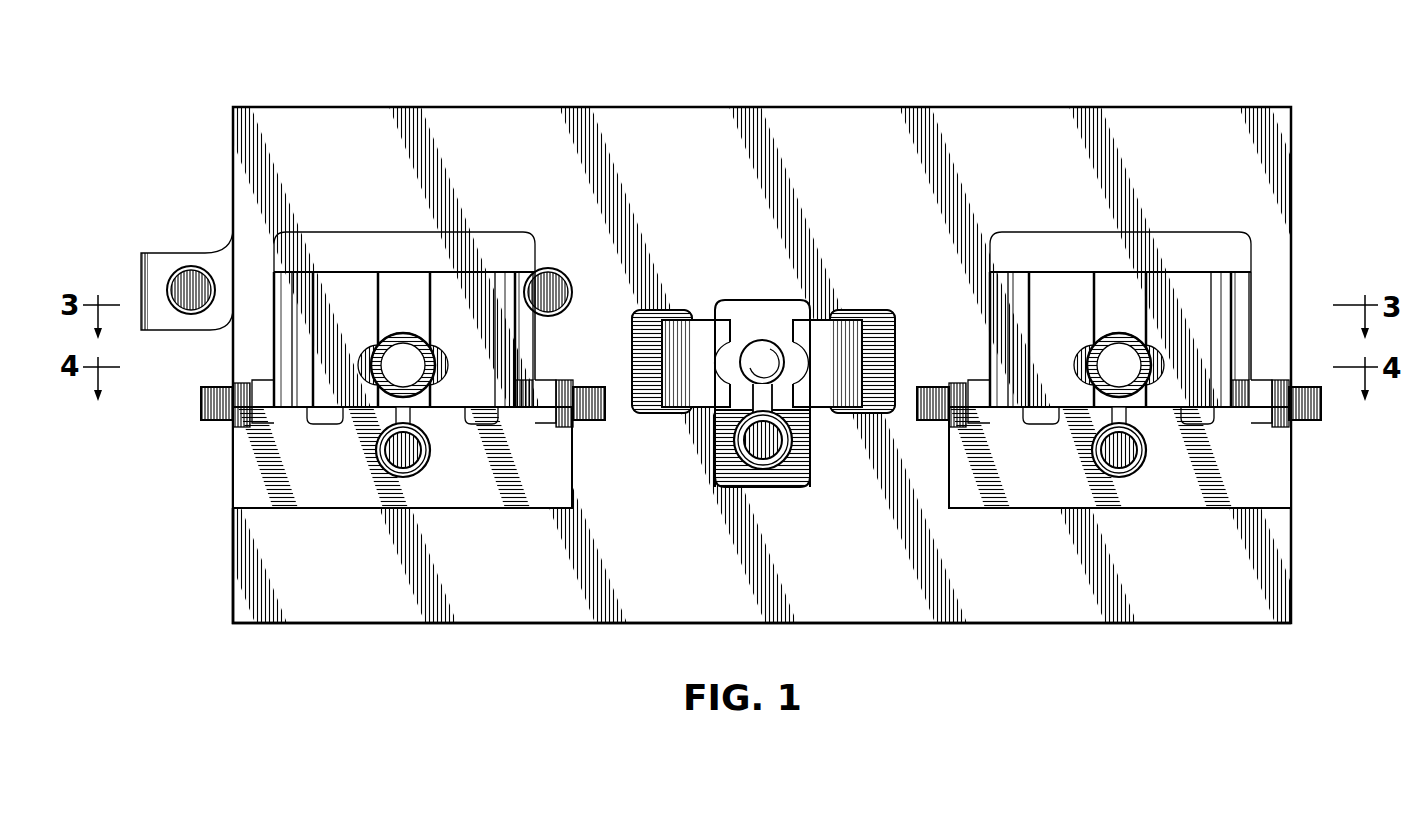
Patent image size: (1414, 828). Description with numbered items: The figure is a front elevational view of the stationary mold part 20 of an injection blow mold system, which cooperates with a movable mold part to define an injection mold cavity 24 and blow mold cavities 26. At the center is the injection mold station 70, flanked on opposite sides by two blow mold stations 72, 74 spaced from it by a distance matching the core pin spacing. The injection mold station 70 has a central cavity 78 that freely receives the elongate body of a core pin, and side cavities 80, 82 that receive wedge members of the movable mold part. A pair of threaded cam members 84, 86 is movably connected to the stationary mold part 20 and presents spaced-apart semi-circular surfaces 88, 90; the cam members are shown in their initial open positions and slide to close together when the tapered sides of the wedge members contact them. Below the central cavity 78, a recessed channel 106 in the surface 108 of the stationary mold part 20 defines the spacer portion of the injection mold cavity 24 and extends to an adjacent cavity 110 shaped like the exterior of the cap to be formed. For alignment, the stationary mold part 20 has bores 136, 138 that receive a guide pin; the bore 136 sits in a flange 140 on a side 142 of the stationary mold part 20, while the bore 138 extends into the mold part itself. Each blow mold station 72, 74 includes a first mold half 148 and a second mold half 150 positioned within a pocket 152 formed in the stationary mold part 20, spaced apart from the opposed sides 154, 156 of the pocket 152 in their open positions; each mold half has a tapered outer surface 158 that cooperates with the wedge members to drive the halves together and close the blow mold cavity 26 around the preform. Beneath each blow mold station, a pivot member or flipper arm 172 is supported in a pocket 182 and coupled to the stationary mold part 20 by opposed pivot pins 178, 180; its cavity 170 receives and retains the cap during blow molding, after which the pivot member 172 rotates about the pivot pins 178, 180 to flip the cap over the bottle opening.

The stationary mold part 20 is at (1292, 159).
The injection mold cavity 24 is at (760, 357).
The blow mold cavity 26 is at (403, 357).
The injection mold station 70 is at (764, 335).
The blow mold station 72 is at (1196, 230).
The blow mold station 74 is at (353, 230).
The central cavity 78 is at (773, 343).
The side cavity 80 is at (878, 311).
The side cavity 82 is at (648, 306).
The threaded cam member 84 is at (845, 318).
The threaded cam member 86 is at (683, 318).
The semi-circular surface 88 is at (815, 352).
The semi-circular surface 90 is at (719, 346).
The recessed channel 106 is at (757, 400).
The surface 108 is at (795, 468).
The adjacent cavity 110 is at (758, 442).
The bore 136 is at (191, 286).
The bore 138 is at (548, 286).
The flange 140 is at (142, 263).
The side 142 is at (232, 577).
The first mold half 148 is at (518, 346).
The second mold half 150 is at (291, 292).
The pocket 152 is at (288, 371).
The side of pocket 154 is at (528, 340).
The side of pocket 156 is at (293, 330).
The tapered outer surface 158 is at (297, 350).
The cavity 170 is at (407, 449).
The pivot member 172 is at (232, 478).
The pivot pin 178 is at (591, 421).
The pivot pin 180 is at (200, 411).
The pocket 182 is at (305, 507).